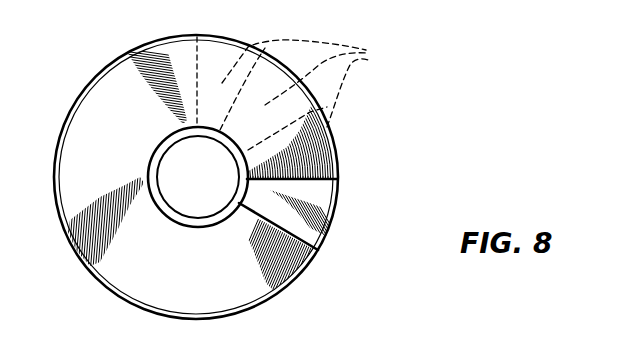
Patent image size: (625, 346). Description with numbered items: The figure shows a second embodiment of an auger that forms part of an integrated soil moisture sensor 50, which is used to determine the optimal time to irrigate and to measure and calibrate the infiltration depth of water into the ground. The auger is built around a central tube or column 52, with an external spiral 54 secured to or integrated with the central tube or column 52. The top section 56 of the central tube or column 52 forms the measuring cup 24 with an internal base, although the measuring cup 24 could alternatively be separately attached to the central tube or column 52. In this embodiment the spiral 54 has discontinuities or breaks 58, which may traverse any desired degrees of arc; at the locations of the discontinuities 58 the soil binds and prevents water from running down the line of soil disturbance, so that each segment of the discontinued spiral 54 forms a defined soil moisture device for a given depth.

The integrated soil moisture sensor 50 is at (420, 97).
The central tube or column 52 is at (198, 228).
The measuring cup 24 is at (148, 166).
The external spiral 54 is at (311, 271).
The top section 56 is at (153, 229).
The discontinuities or breaks 58 is at (370, 232).